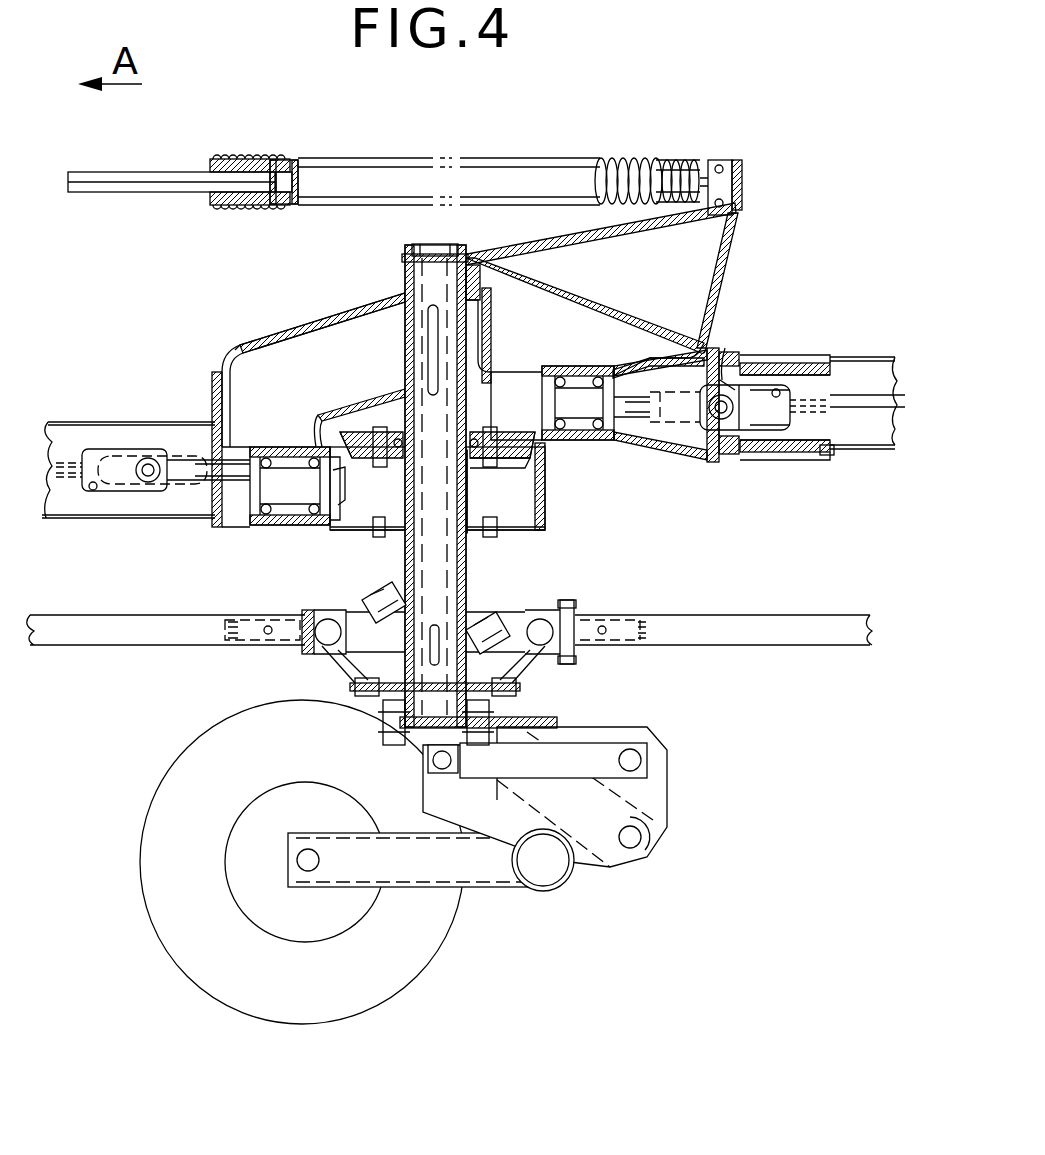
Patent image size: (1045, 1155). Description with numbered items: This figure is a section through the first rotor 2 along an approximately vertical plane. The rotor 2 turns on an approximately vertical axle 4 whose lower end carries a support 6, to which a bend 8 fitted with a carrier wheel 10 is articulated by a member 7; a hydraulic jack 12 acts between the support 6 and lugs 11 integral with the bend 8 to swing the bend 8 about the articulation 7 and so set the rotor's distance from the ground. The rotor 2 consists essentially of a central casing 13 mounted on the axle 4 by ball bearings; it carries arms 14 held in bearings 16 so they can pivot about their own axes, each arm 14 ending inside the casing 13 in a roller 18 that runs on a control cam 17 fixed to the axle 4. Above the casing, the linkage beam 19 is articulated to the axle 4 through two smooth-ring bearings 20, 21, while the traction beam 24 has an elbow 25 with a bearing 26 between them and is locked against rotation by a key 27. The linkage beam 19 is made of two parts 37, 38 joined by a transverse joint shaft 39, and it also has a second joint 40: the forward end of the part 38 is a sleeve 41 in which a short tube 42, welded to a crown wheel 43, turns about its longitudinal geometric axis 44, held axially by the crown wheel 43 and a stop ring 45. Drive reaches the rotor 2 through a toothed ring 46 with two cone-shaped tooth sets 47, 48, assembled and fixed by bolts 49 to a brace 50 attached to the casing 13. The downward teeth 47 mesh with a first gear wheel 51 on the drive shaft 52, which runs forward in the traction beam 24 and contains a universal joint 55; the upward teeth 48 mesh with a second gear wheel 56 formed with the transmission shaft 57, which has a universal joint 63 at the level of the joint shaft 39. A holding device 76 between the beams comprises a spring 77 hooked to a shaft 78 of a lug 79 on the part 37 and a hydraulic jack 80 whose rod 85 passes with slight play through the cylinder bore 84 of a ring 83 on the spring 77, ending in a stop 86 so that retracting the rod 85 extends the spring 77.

The first rotor 2 is at (178, 645).
The approximately vertical axle 4 is at (455, 249).
The support 6 is at (658, 798).
The articulation member 7 is at (637, 840).
The bend 8 is at (492, 877).
The carrier wheel 10 is at (178, 853).
The lug 11 is at (437, 798).
The hydraulic jack 12 is at (610, 752).
The central casing 13 is at (330, 665).
The arm 14 is at (700, 627).
The bearing 16 is at (578, 622).
The control cam 17 is at (472, 635).
The roller 18 is at (500, 660).
The linkage beam 19 is at (868, 352).
The bearing 20 is at (405, 282).
The bearing 21 is at (408, 405).
The traction beam 24 is at (105, 424).
The elbow 25 is at (238, 372).
The bearing 26 is at (406, 350).
The key 27 is at (434, 333).
The part of linkage beam 37 is at (684, 440).
The part of linkage beam 38 is at (862, 448).
The transverse joint shaft 39 is at (709, 450).
The second joint 40 is at (815, 352).
The sleeve 41 is at (728, 370).
The tube 42 is at (783, 452).
The crown wheel 43 is at (815, 455).
The longitudinal geometric axis 44 is at (758, 390).
The stop ring 45 is at (735, 455).
The toothed ring 46 is at (530, 456).
The cone-shaped teeth 47 is at (530, 470).
The cone-shaped teeth 48 is at (337, 432).
The bolts 49 is at (490, 465).
The brace 50 is at (480, 505).
The first gear wheel 51 is at (340, 530).
The drive shaft 52 is at (258, 500).
The universal joint 55 is at (148, 486).
The second gear wheel 56 is at (518, 395).
The transmission shaft 57 is at (595, 395).
The universal joint 63 is at (718, 345).
The holding device 76 is at (468, 156).
The spring 77 is at (622, 160).
The shaft 78 is at (724, 166).
The lug 79 is at (710, 252).
The hydraulic jack 80 is at (98, 170).
The ring 83 is at (214, 166).
The cylinder bore 84 is at (211, 197).
The rod 85 is at (134, 188).
The stop 86 is at (289, 164).